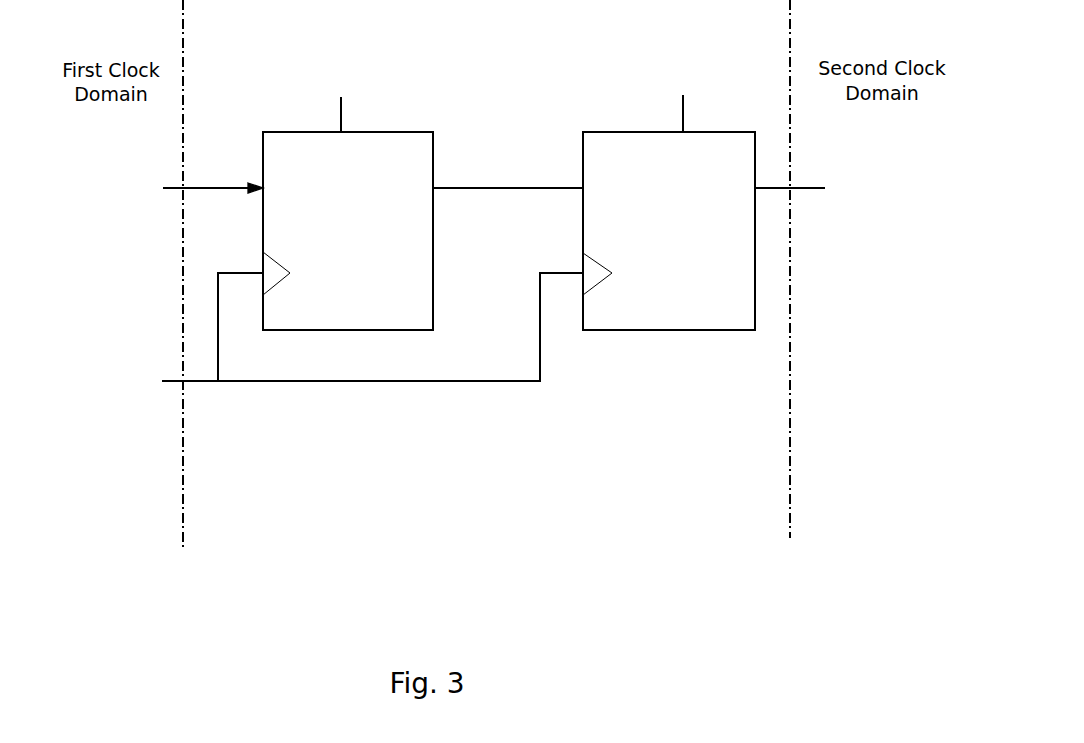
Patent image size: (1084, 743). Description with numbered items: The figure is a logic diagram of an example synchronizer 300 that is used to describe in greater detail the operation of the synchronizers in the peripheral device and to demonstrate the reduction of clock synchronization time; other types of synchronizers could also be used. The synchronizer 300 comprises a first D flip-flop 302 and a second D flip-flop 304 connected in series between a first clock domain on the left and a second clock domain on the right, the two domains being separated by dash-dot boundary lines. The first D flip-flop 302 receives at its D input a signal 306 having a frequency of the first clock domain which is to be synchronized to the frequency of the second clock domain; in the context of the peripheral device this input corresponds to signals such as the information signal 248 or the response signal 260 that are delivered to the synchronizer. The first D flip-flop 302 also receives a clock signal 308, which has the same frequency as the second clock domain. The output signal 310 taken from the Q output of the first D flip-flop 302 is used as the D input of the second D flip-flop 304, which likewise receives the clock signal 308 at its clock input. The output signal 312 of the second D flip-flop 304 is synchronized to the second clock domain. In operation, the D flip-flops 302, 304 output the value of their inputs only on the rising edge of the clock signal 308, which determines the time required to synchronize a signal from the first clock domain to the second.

The synchronizer 300 is at (399, 546).
The first D flip-flop 302 is at (412, 132).
The second D flip-flop 304 is at (611, 132).
The signal 306 is at (219, 188).
The information signal 248 is at (250, 195).
The response signal 260 is at (252, 186).
The output signal 310 is at (482, 188).
The output signal 312 is at (818, 187).
The clock signal 308 is at (197, 381).